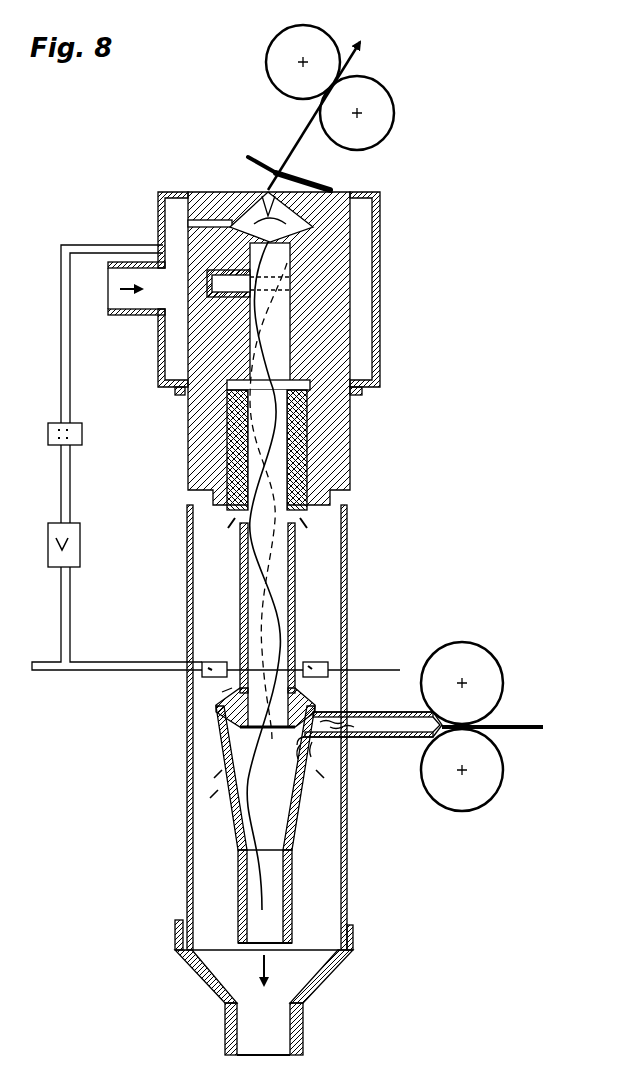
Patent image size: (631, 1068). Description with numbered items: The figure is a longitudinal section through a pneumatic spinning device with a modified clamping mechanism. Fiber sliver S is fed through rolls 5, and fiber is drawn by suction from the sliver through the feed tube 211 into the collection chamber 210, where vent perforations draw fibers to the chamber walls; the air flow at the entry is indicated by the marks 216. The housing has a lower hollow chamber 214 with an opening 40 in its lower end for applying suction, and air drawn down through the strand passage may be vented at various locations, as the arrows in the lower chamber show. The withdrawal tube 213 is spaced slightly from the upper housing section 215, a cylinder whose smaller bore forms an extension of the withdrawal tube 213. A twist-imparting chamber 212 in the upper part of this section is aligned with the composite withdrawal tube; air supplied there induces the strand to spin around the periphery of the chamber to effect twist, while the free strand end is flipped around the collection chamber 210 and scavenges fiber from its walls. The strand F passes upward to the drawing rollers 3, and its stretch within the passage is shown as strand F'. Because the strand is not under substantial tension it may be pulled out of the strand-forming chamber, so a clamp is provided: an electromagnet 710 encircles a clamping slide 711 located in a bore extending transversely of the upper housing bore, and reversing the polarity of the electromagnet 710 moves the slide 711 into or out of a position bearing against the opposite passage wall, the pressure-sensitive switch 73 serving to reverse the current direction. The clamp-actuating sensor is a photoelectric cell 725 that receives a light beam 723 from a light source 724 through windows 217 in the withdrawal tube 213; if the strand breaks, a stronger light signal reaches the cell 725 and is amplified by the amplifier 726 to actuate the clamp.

The drawing rollers 3 is at (382, 113).
The rolls 5 is at (473, 800).
The opening 40 is at (197, 973).
The pressure-sensitive switch 73 is at (73, 435).
The collection chamber 210 is at (230, 783).
The feed tube 211 is at (353, 712).
The twist-imparting chamber 212 is at (252, 221).
The withdrawal tube 213 is at (296, 540).
The lower hollow chamber 214 is at (185, 610).
The upper housing section 215 is at (205, 450).
The air flow 216 is at (310, 733).
The windows 217 is at (340, 650).
The electromagnet 710 is at (187, 307).
The clamping slide 711 is at (216, 273).
The light beam 723 is at (222, 692).
The light source 724 is at (328, 671).
The photoelectric cell 725 is at (205, 678).
The amplifier 726 is at (75, 557).
The fiber F is at (303, 476).
The strand F' is at (318, 445).
The sliver S is at (523, 731).